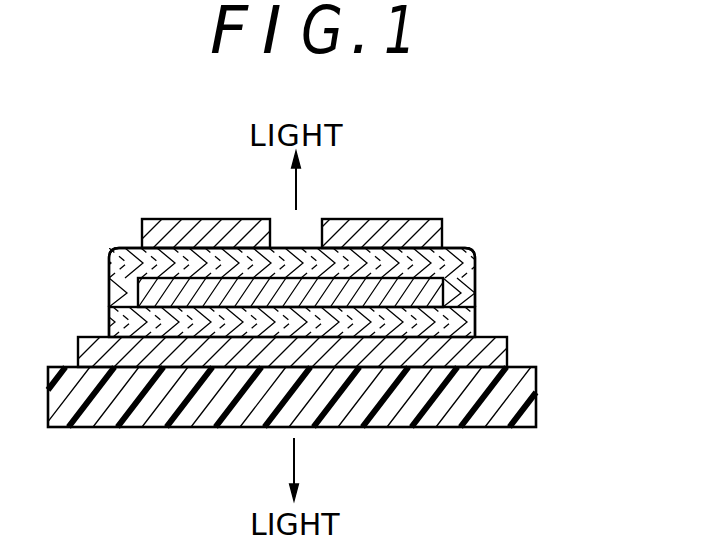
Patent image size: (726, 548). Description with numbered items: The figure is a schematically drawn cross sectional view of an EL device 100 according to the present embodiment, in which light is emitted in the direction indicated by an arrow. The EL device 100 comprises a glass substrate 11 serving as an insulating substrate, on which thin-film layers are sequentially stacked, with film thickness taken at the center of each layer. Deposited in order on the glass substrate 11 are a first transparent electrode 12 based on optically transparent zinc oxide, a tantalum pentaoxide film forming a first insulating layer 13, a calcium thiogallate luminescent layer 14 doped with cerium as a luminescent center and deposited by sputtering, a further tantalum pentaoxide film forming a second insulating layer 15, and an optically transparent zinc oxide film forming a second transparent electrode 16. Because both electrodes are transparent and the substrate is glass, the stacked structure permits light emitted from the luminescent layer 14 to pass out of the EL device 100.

The EL device 100 is at (122, 235).
The glass substrate 11 is at (536, 410).
The first transparent electrode 12 is at (507, 355).
The first insulating layer 13 is at (475, 325).
The luminescent layer 14 is at (443, 290).
The second insulating layer 15 is at (475, 258).
The second transparent electrode 16 is at (442, 224).